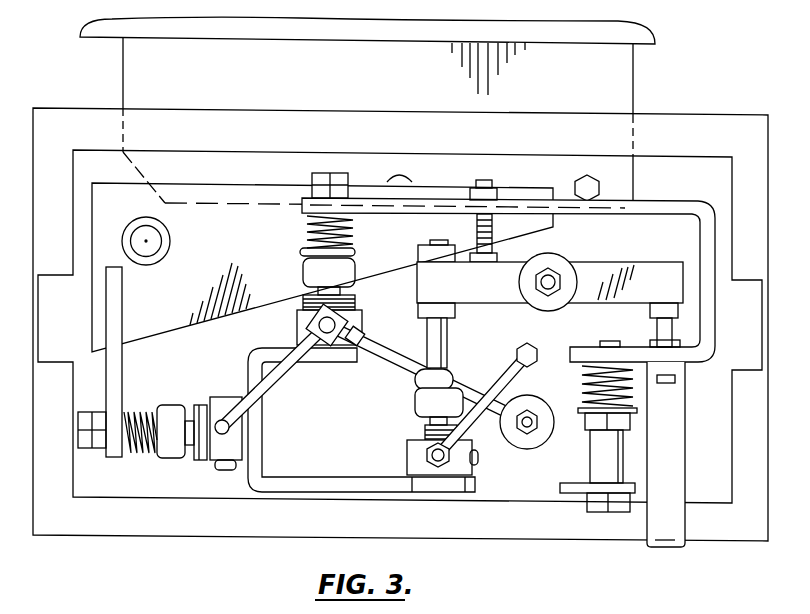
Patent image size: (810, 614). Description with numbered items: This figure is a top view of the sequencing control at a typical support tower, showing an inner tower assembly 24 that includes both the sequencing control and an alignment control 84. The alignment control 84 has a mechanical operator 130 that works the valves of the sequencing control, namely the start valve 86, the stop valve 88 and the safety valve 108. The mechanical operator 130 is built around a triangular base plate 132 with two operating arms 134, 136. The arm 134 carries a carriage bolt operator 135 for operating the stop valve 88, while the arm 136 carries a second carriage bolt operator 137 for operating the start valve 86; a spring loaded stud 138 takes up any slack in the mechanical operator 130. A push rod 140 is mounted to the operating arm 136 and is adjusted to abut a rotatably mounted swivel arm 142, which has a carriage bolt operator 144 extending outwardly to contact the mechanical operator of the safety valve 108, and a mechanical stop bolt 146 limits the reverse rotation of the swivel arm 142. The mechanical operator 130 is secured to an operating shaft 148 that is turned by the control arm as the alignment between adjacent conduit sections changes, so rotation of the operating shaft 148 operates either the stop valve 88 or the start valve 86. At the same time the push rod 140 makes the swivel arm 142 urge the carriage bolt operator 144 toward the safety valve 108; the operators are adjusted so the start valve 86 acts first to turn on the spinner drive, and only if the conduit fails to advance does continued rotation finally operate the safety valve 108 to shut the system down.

The inner tower assembly 24 is at (108, 75).
The alignment control 84 is at (670, 100).
The start valve 86 is at (221, 354).
The stop valve 88 is at (210, 461).
The safety valve 108 is at (408, 454).
The mechanical operator 130 is at (322, 282).
The triangular base plate 132 is at (98, 277).
The operating arm 134 is at (116, 368).
The carriage bolt operator 135 is at (141, 457).
The operating arm 136 is at (682, 207).
The second carriage bolt operator 137 is at (355, 250).
The spring loaded stud 138 is at (592, 456).
The push rod 140 is at (492, 236).
The swivel arm 142 is at (662, 243).
The carriage bolt operator 144 is at (447, 343).
The mechanical stop bolt 146 is at (657, 324).
The operating shaft 148 is at (163, 242).